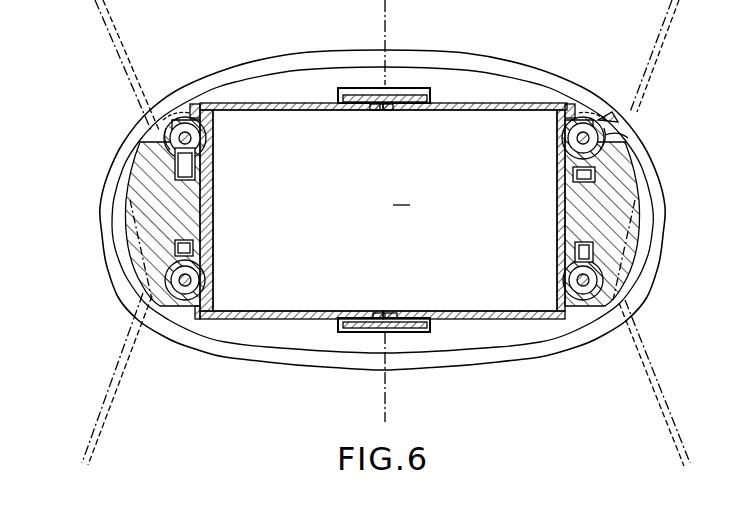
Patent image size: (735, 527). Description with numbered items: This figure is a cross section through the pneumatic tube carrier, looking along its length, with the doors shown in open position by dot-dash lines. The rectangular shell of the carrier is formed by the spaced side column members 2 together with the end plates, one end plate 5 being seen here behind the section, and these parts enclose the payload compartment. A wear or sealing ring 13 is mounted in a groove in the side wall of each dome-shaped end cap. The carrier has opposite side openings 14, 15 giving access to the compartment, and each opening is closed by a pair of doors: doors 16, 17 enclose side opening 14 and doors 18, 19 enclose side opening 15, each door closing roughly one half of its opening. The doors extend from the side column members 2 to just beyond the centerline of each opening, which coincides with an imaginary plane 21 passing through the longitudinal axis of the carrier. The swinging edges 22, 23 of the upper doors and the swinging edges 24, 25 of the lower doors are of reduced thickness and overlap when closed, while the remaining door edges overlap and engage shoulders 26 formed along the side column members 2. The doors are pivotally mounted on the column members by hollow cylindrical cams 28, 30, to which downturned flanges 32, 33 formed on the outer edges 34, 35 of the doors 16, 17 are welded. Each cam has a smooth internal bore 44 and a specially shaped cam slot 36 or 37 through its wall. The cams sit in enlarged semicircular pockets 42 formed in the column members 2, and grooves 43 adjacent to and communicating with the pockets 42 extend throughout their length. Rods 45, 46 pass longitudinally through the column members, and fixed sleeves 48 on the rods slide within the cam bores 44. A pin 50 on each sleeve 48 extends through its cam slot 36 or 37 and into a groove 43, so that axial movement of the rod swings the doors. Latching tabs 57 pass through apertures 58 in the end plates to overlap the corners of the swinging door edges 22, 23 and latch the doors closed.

The side column member 2 is at (150, 227).
The end plate 5 is at (248, 338).
The sealing ring 13 is at (307, 366).
The side opening 14 is at (508, 128).
The side opening 15 is at (528, 288).
The door 16 is at (303, 100).
The door 17 is at (462, 100).
The door 18 is at (283, 321).
The door 19 is at (455, 321).
The imaginary plane 21 is at (388, 18).
The swinging edge 22 is at (385, 108).
The swinging edge 23 is at (386, 111).
The swinging edge 24 is at (385, 315).
The swinging edge 25 is at (390, 316).
The shoulder 26 is at (175, 108).
The cylindrical cam 28 is at (167, 111).
The cylindrical cam 30 is at (597, 110).
The downturned flange 32 is at (215, 123).
The downturned flange 33 is at (568, 115).
The outer edge 34 is at (197, 101).
The outer edge 35 is at (575, 107).
The cam slot 36 is at (180, 187).
The cam slot 37 is at (632, 133).
The semicircular pocket 42 is at (167, 163).
The groove 43 is at (183, 240).
The internal bore 44 is at (213, 145).
The rod 45 is at (617, 120).
The rod 46 is at (167, 123).
The fixed sleeve 48 is at (157, 135).
The pin 50 is at (192, 173).
The latching tab 57 is at (352, 99).
The aperture 58 is at (402, 96).